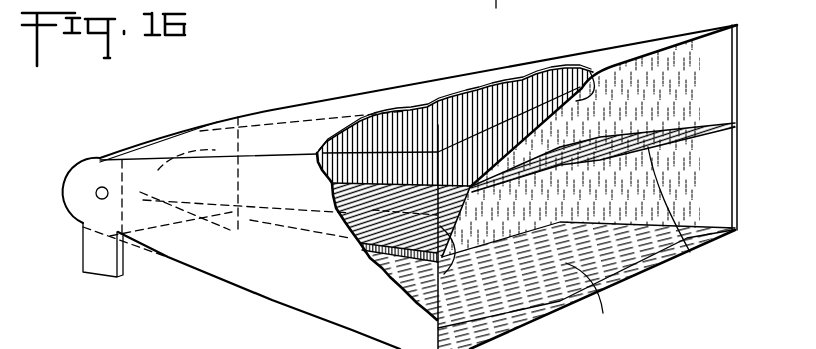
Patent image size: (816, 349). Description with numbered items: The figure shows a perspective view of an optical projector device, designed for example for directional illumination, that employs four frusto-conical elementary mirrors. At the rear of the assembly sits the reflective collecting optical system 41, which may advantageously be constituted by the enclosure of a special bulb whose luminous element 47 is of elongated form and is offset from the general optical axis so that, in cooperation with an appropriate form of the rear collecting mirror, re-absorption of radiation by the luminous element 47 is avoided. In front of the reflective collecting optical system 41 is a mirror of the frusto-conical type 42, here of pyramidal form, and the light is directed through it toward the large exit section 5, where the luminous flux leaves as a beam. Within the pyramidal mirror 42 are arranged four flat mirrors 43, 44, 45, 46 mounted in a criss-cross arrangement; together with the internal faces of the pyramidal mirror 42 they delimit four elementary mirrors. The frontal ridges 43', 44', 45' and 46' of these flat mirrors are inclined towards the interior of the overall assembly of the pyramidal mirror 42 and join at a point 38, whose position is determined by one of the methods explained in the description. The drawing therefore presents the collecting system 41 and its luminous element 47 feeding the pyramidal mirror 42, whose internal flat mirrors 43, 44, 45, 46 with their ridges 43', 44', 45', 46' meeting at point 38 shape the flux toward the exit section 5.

The large exit section 5 is at (495, 18).
The point 38 is at (481, 192).
The reflective collecting optical system 41 is at (123, 140).
The mirror of the frusto-conical type 42 is at (288, 100).
The flat mirror 43 is at (455, 181).
The frontal ridge 43' is at (570, 59).
The flat mirror 44 is at (548, 285).
The frontal ridge 44' is at (606, 304).
The flat mirror 45 is at (391, 236).
The frontal ridge 45' is at (399, 288).
The flat mirror 46 is at (589, 128).
The frontal ridge 46' is at (692, 215).
The luminous element 47 is at (97, 197).